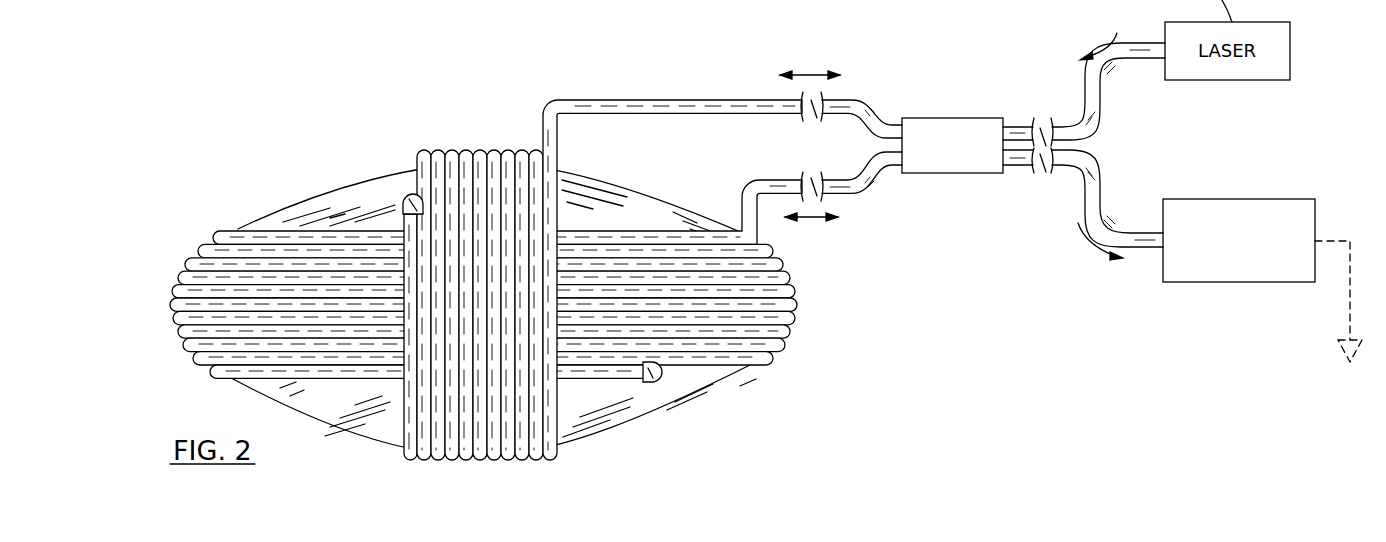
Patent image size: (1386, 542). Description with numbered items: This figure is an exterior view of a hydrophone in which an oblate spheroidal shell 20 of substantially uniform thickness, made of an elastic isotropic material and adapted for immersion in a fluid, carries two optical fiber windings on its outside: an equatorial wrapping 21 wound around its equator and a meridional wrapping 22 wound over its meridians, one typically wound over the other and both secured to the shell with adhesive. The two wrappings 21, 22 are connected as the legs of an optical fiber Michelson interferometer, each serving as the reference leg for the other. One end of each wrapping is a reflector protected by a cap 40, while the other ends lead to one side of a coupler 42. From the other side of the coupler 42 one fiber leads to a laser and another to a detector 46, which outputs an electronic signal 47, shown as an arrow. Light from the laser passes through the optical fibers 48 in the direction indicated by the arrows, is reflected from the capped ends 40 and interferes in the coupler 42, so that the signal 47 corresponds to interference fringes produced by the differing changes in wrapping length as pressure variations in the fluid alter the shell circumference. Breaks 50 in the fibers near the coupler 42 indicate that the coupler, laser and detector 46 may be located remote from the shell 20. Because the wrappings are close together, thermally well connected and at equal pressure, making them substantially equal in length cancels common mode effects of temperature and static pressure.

The oblate spheroidal shell 20 is at (356, 440).
The equatorial wrapping 21 is at (170, 292).
The meridional wrapping 22 is at (488, 148).
The cap 40 is at (405, 201).
The coupler 42 is at (948, 118).
The detector 46 is at (1257, 284).
The electronic signal 47 is at (1346, 297).
The optical fibers 48 is at (808, 72).
The breaks 50 is at (813, 108).